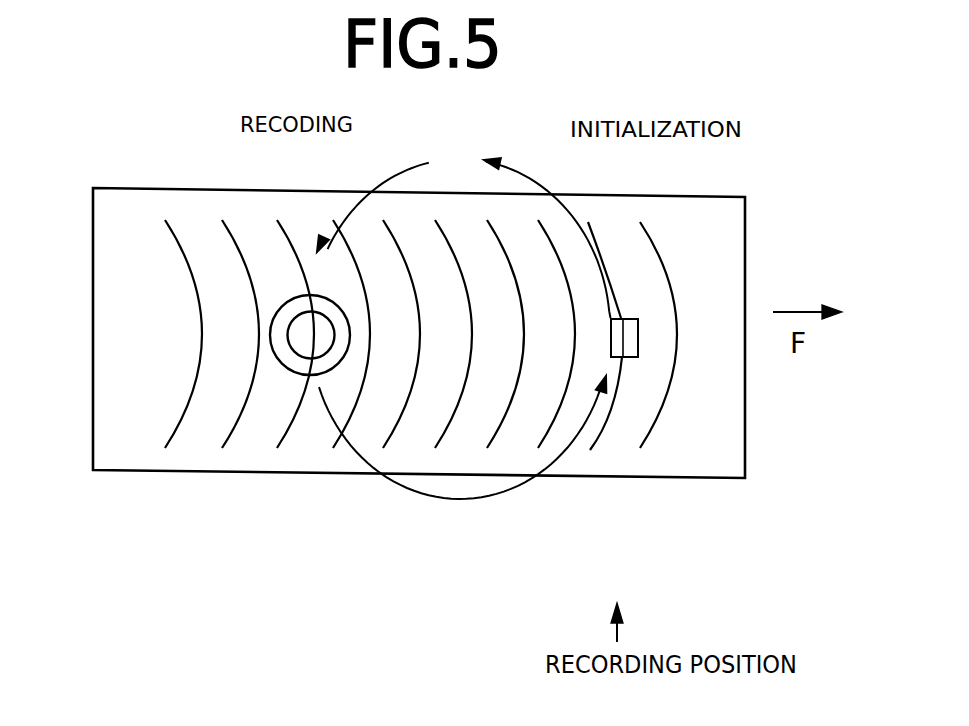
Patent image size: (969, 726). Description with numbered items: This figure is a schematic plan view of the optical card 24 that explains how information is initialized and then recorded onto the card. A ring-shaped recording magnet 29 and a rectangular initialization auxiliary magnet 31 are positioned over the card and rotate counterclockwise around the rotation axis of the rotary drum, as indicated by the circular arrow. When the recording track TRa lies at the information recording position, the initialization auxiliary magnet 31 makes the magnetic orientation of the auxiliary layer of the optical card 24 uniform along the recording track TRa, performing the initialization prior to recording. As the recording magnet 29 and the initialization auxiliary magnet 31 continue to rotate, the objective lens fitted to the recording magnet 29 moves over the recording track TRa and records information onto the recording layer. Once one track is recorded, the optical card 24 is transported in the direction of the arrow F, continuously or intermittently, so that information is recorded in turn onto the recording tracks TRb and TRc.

The optical card 24 is at (745, 237).
The recording magnet 29 is at (311, 282).
The initialization auxiliary magnet 31 is at (630, 318).
The recording track TRa is at (602, 433).
The recording track TRb is at (553, 433).
The recording track TRc is at (502, 433).